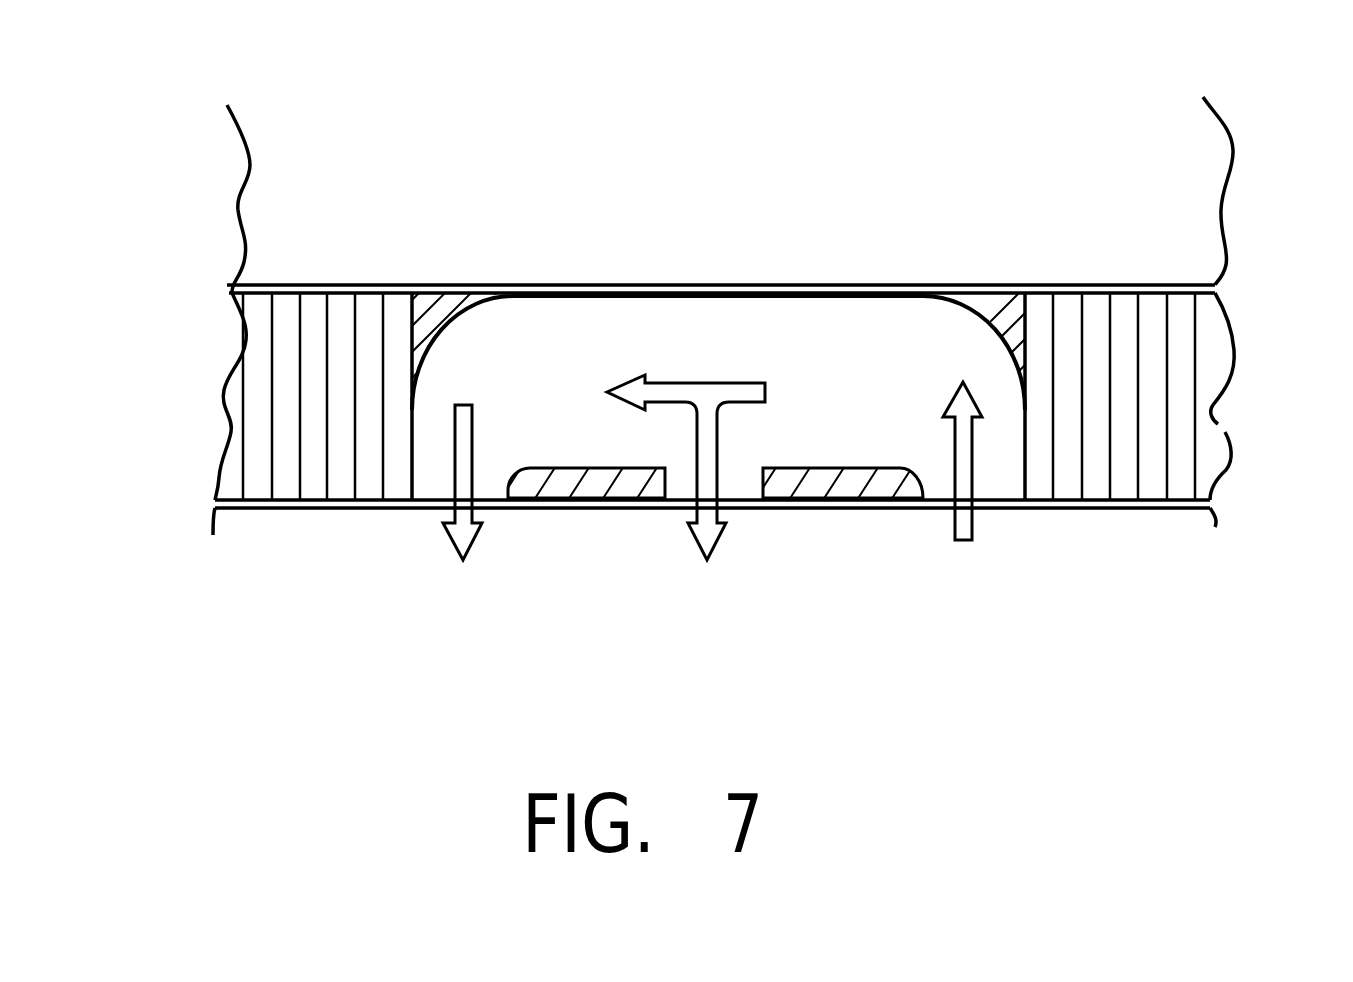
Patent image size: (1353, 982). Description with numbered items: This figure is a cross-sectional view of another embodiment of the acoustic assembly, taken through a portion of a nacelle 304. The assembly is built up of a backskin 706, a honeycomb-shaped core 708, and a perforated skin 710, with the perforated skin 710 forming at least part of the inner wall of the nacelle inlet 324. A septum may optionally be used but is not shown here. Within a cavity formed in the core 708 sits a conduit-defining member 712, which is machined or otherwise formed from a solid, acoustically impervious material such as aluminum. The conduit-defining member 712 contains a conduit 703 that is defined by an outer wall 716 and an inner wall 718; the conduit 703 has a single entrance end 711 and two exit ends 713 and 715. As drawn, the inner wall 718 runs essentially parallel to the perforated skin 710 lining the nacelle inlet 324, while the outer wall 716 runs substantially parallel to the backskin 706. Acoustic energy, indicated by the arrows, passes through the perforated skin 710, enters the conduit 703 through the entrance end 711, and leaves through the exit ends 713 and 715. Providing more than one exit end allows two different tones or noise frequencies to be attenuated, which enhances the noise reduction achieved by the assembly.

The substrate 304 is at (245, 158).
The nacelle inlet 324 is at (633, 508).
The conduit 703 is at (613, 377).
The backskin 706 is at (1097, 285).
The honeycomb-shaped core 708 is at (1153, 472).
The perforated skin 710 is at (313, 508).
The entrance end 711 is at (1002, 475).
The conduit-defining member 712 is at (992, 315).
The exit end 713 is at (738, 483).
The exit end 715 is at (495, 478).
The outer wall 716 is at (765, 297).
The inner wall 718 is at (621, 468).